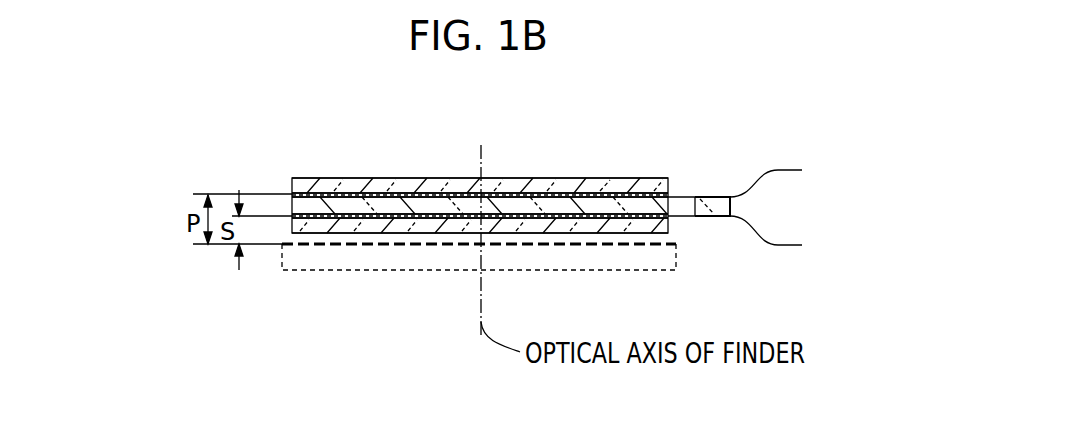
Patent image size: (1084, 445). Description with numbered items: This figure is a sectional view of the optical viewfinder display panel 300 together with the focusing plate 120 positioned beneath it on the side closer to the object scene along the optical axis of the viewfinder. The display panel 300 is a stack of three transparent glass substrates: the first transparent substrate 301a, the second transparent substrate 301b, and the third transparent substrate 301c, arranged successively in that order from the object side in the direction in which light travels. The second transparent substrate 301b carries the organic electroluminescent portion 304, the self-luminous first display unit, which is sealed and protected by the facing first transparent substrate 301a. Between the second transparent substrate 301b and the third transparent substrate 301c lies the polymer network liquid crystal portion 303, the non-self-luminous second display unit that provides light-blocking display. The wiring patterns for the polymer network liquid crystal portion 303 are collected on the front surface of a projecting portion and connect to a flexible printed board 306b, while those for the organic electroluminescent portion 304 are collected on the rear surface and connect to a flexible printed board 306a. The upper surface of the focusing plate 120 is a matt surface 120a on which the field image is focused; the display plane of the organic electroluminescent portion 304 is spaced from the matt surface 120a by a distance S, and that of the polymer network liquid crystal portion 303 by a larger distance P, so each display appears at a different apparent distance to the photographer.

The display panel 300 is at (710, 114).
The first transparent substrate 301a is at (615, 226).
The second transparent substrate 301b is at (540, 212).
The third transparent substrate 301c is at (436, 188).
The polymer network liquid crystal portion 303 is at (369, 191).
The organic electroluminescent portion 304 is at (403, 217).
The flexible printed board 306a is at (777, 247).
The flexible printed board 306b is at (777, 168).
The focusing plate 120 is at (656, 258).
The matt surface 120a is at (584, 247).